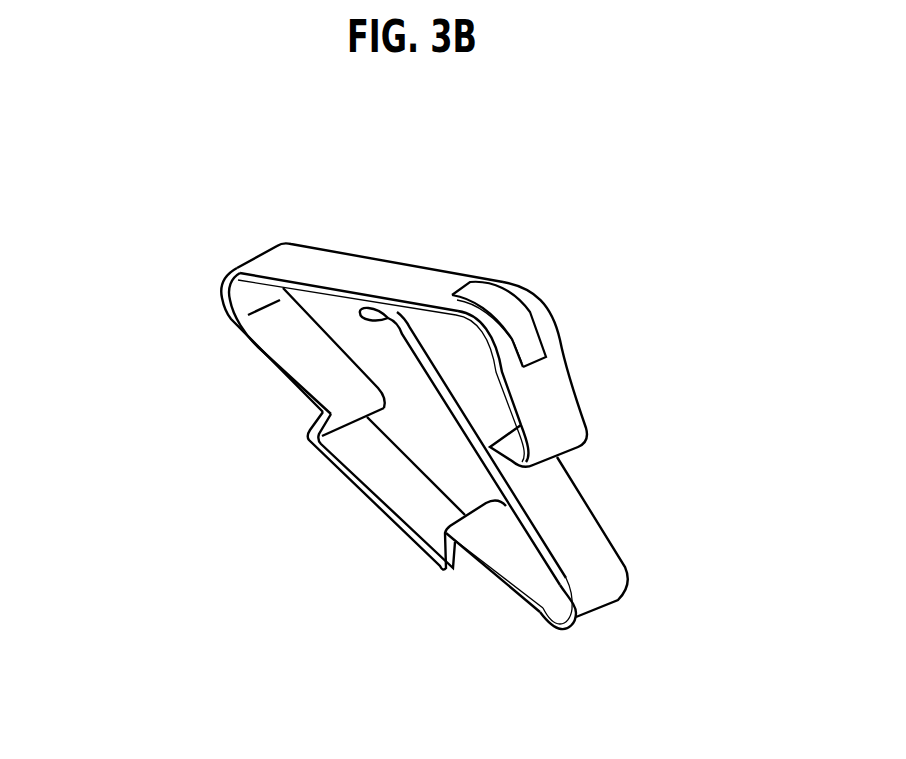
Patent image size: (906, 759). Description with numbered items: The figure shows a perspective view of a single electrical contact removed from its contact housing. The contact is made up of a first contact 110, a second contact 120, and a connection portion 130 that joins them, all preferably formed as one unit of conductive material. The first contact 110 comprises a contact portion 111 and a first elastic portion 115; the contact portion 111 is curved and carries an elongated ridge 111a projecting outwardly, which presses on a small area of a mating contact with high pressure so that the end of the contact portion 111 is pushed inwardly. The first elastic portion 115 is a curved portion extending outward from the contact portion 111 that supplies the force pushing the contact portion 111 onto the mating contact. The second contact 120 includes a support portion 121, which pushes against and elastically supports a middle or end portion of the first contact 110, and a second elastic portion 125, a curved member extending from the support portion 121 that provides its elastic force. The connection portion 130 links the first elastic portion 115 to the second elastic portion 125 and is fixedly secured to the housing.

The first contact 110 is at (124, 195).
The contact portion 111 is at (273, 260).
The elongated ridge 111a is at (514, 313).
The first elastic portion 115 is at (224, 293).
The second contact 120 is at (728, 528).
The support portion 121 is at (580, 523).
The second elastic portion 125 is at (574, 613).
The connection portion 130 is at (383, 509).